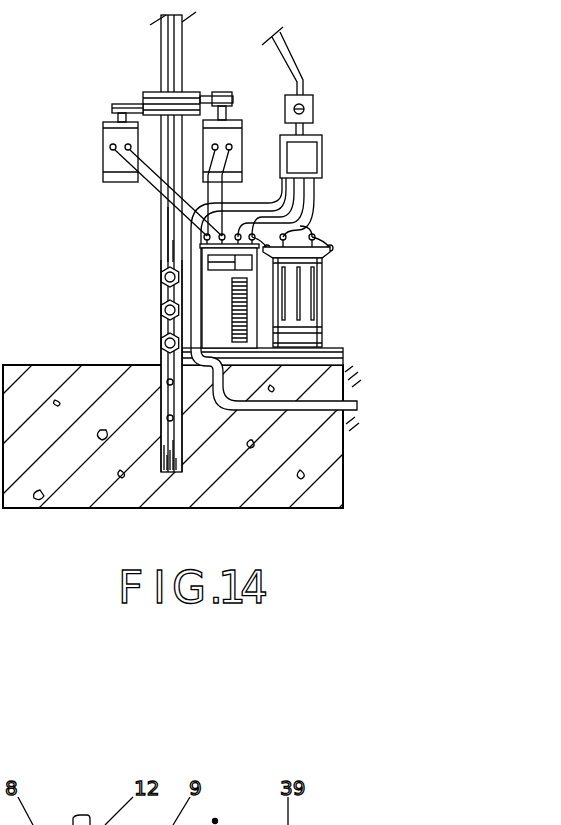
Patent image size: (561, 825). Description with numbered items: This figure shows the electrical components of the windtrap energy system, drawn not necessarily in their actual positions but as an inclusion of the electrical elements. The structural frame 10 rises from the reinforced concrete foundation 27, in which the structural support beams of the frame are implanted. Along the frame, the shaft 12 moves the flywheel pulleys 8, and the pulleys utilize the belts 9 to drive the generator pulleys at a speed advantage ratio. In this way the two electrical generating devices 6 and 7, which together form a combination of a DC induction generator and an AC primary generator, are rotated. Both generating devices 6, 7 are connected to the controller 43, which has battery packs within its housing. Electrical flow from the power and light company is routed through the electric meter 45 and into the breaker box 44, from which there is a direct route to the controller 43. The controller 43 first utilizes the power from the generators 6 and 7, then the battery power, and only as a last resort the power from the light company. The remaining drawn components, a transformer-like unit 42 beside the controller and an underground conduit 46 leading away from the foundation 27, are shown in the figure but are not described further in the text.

The shaft 12 is at (170, 43).
The structural frame 10 is at (160, 224).
The flywheel 8 is at (193, 93).
The belts 9 is at (133, 106).
The electrical generating device 7 is at (105, 156).
The electrical generating device 6 is at (243, 150).
The electric meter 45 is at (310, 100).
The breaker box 44 is at (303, 160).
The controller 43 is at (215, 297).
The transformer 42 is at (302, 292).
The underground conduit 46 is at (305, 407).
The reinforced concrete foundation 27 is at (59, 462).